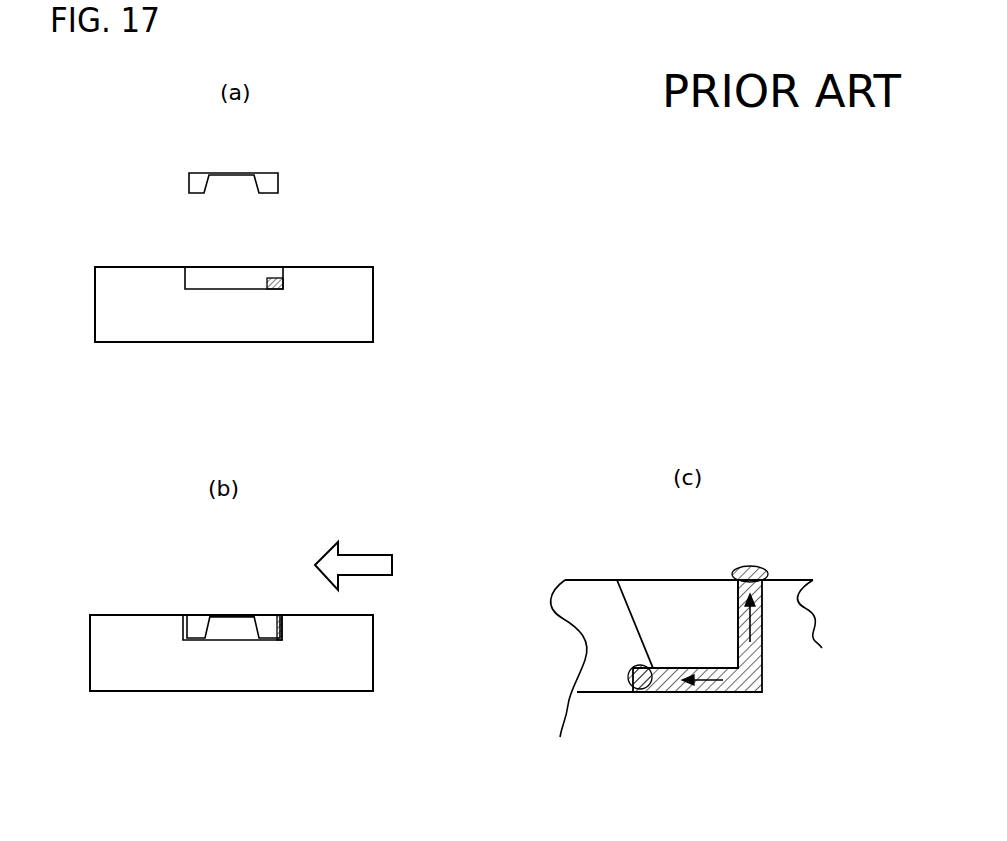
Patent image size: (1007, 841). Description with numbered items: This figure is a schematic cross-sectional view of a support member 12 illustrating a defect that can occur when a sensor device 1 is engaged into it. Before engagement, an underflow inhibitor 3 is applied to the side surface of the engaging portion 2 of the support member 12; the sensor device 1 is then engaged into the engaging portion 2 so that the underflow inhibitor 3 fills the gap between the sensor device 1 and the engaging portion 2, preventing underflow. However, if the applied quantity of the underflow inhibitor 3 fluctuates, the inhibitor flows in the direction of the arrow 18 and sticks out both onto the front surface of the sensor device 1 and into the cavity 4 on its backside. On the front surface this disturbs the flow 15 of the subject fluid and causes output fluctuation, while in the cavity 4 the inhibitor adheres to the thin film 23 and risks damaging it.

The sensor device 1 is at (202, 175).
The engaging portion 2 is at (215, 289).
The underflow inhibitor 3 is at (283, 283).
The cavity 4 is at (222, 623).
The substrate 12 is at (357, 300).
The flow 15 is at (355, 565).
The arrow 18 is at (760, 650).
The thin film 23 is at (237, 617).